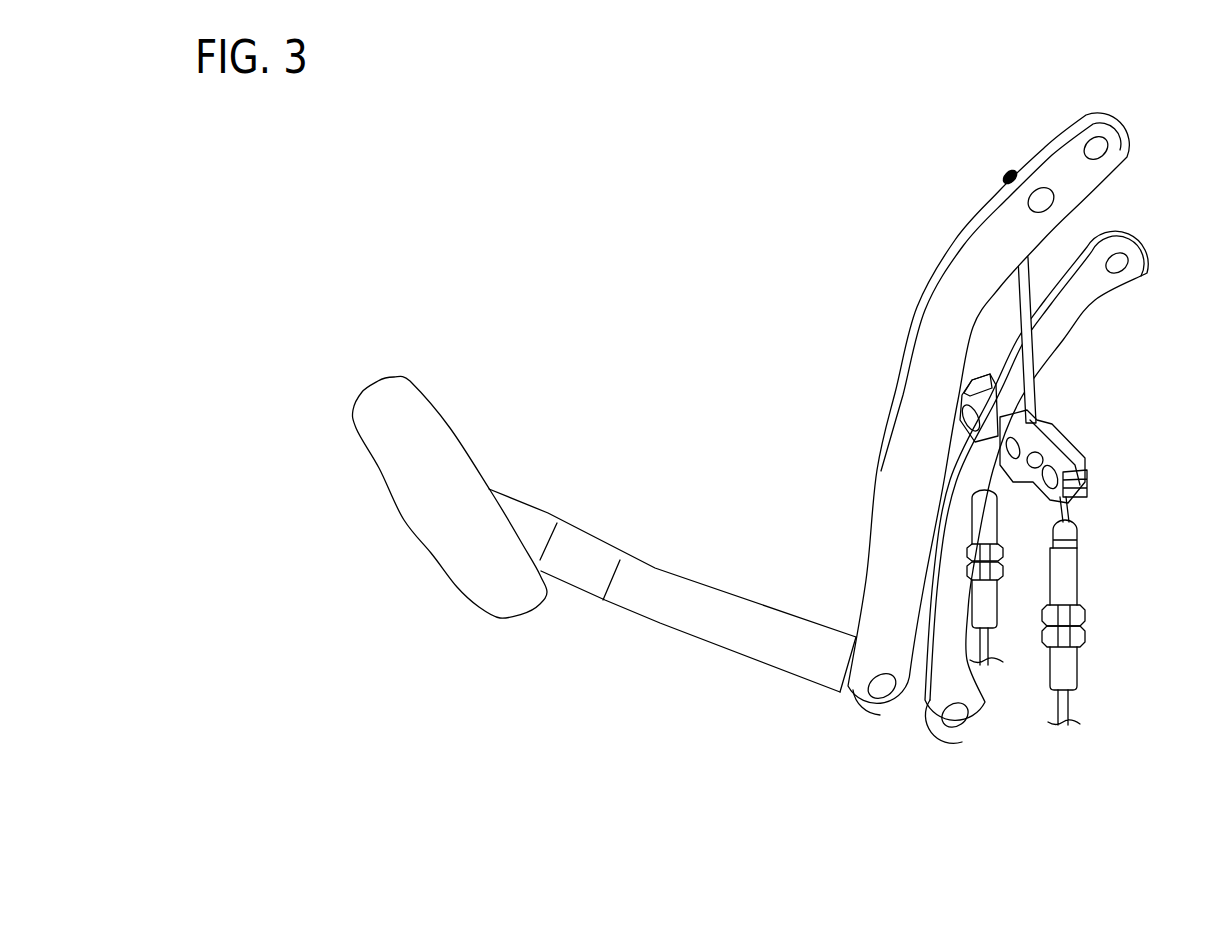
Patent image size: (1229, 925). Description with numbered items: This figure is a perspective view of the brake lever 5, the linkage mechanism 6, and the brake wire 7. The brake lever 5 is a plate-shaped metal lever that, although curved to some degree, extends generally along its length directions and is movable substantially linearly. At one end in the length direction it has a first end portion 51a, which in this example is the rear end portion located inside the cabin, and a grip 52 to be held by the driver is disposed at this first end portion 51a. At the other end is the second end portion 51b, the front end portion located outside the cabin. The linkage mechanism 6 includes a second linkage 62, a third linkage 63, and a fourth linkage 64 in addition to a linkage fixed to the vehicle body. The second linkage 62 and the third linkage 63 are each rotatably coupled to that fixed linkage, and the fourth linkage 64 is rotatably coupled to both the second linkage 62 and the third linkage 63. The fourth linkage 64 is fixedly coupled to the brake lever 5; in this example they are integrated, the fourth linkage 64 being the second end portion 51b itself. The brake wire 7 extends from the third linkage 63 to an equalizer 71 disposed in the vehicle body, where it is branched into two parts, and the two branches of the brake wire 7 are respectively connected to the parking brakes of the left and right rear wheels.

The brake lever 5 is at (721, 609).
The first end portion 51a is at (541, 507).
The second end portion 51b is at (913, 722).
The grip 52 is at (373, 384).
The linkage mechanism 6 is at (968, 464).
The second linkage 62 is at (1072, 340).
The third linkage 63 is at (885, 443).
The fourth linkage 64 is at (903, 713).
The brake wire 7 is at (1017, 307).
The equalizer 71 is at (1050, 421).